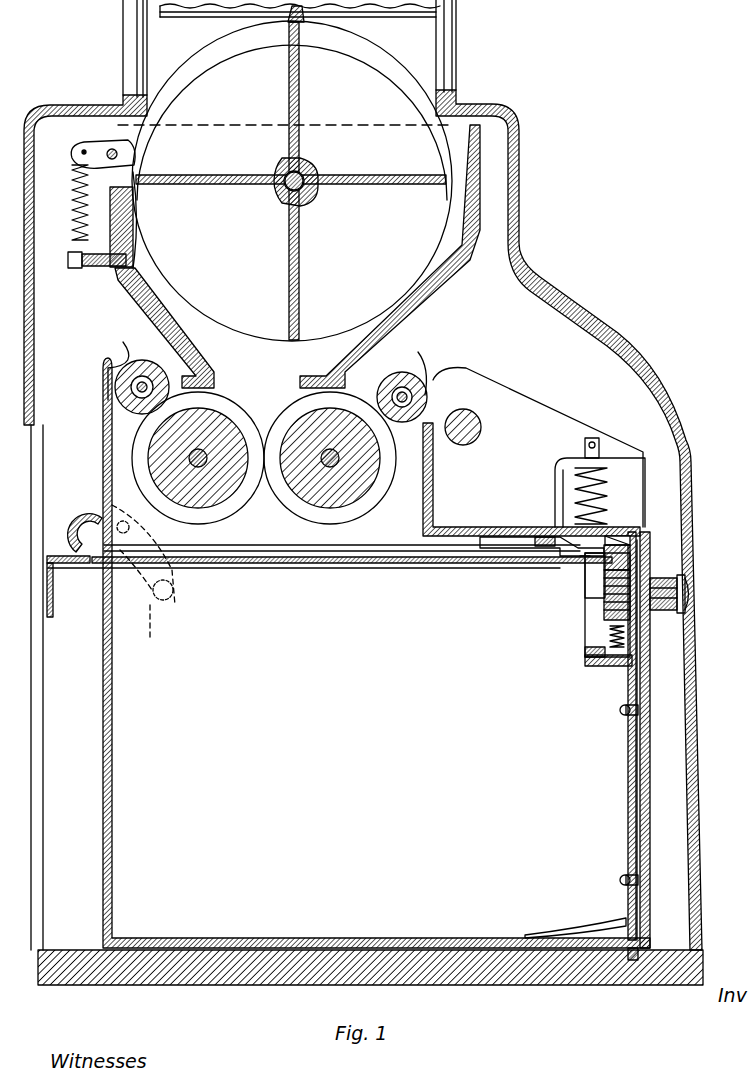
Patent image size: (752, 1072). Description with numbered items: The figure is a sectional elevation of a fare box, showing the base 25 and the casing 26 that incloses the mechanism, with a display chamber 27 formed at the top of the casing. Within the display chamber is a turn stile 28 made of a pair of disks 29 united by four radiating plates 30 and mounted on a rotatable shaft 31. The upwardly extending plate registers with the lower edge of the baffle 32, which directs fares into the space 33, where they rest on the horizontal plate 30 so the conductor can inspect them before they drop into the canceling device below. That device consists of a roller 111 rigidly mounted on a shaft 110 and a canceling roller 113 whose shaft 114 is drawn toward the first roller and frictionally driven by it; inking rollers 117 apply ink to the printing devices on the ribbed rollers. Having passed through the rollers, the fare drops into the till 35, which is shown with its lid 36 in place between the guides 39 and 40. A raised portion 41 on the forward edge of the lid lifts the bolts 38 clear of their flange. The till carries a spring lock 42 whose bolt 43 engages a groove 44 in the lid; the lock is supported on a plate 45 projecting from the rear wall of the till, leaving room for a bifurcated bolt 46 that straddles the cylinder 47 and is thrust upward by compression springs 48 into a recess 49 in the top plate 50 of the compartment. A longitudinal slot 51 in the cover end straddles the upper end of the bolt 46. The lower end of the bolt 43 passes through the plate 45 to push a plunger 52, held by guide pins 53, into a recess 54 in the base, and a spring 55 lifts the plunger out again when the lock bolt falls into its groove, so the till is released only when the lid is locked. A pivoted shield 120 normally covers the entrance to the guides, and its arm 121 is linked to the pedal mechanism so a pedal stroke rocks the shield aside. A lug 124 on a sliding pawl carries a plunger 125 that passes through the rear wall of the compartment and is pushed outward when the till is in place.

The base 25 is at (486, 985).
The casing 26 is at (616, 362).
The display chamber 27 is at (178, 33).
The turn stile 28 is at (306, 170).
The disks 29 is at (212, 326).
The radiating plates 30 is at (300, 62).
The rotatable shaft 31 is at (302, 204).
The baffle 32 is at (302, 12).
The space 33 is at (212, 73).
The till 35 is at (150, 796).
The lid 36 is at (276, 562).
The bolts 38 is at (600, 526).
The guide 39 is at (238, 566).
The guide 40 is at (236, 555).
The raised portion 41 is at (536, 532).
The spring lock 42 is at (594, 606).
The bolt 43 is at (590, 560).
The groove 44 is at (546, 562).
The plate 45 is at (586, 658).
The bolt 46 is at (632, 558).
The cylinder 47 is at (650, 614).
The compression springs 48 is at (608, 636).
The recess 49 is at (622, 534).
The top plate 50 is at (448, 528).
The longitudinal slot 51 is at (566, 550).
The plunger 52 is at (628, 776).
The guide pins 53 is at (620, 710).
The recess 54 is at (633, 958).
The spring 55 is at (610, 930).
The shaft 110 is at (201, 468).
The roller 111 is at (246, 386).
The canceling roller 113 is at (296, 410).
The shaft 114 is at (338, 462).
The inking rollers 117 is at (124, 360).
The shield 120 is at (70, 526).
The arm 121 is at (153, 604).
The lug 124 is at (684, 580).
The plunger 125 is at (672, 576).